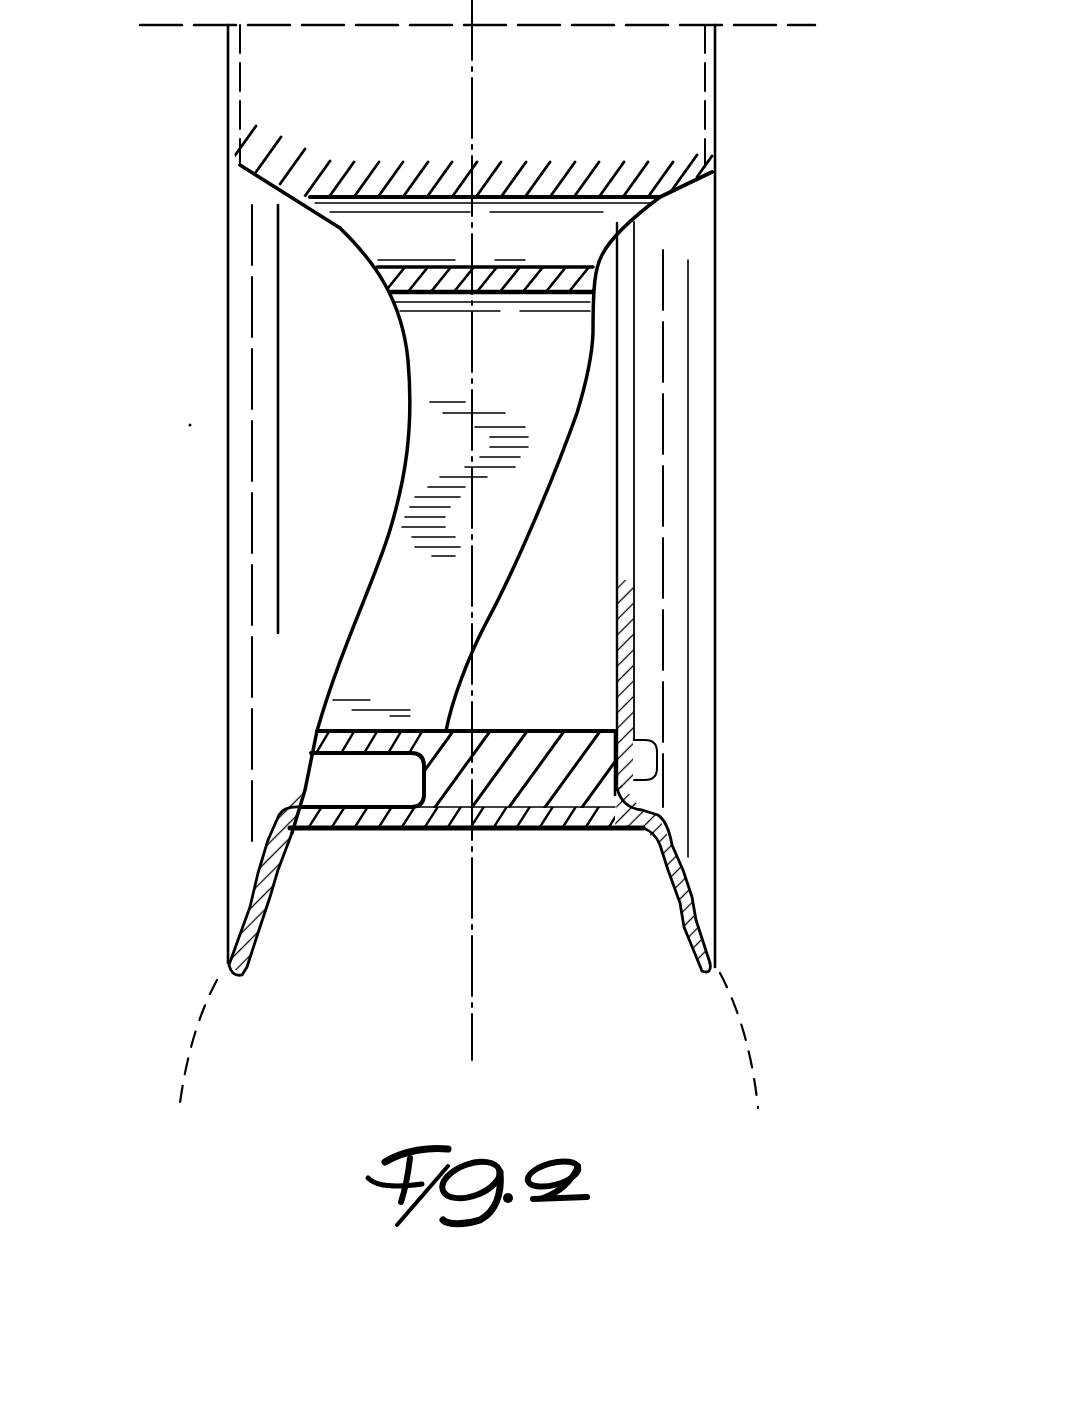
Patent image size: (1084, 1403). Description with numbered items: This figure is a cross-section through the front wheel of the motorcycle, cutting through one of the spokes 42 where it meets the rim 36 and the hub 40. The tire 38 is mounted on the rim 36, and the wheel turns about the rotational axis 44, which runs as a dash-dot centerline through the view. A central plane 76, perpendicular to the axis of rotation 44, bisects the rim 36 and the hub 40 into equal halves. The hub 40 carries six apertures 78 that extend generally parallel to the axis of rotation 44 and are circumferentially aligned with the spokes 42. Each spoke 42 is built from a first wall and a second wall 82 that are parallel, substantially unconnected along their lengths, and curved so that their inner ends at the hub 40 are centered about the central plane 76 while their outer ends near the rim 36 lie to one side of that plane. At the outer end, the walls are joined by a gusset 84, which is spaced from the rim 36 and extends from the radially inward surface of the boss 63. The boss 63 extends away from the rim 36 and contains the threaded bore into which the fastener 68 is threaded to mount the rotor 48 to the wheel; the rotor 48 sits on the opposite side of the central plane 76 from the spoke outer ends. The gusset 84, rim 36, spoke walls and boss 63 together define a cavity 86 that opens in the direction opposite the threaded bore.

The rim 36 is at (320, 832).
The tire 38 is at (195, 1028).
The hub 40 is at (673, 160).
The spokes 42 is at (358, 555).
The rotational axis 44 is at (795, 28).
The rotor 48 is at (637, 648).
The boss 63 is at (567, 733).
The fastener 68 is at (658, 757).
The central plane 76 is at (475, 990).
The apertures 78 is at (360, 230).
The second wall 82 is at (556, 389).
The gusset 84 is at (405, 731).
The cavity 86 is at (333, 776).